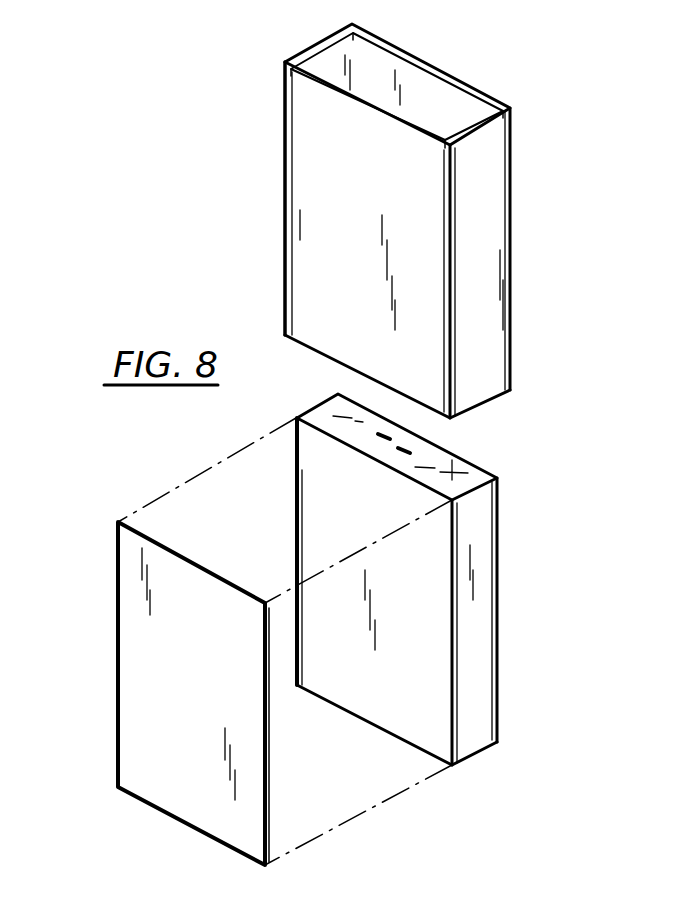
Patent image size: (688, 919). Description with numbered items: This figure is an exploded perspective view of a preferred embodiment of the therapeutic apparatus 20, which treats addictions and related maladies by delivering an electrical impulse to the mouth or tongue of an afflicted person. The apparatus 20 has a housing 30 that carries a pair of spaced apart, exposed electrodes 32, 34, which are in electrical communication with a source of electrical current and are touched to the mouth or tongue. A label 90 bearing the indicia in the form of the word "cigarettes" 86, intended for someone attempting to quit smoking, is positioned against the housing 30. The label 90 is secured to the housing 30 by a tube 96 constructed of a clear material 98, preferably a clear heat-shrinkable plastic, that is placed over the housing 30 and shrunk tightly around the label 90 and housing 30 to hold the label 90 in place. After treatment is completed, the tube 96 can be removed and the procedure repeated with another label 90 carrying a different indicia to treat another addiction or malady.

The tube 96 is at (450, 221).
The clear material 98 is at (532, 130).
The therapeutic apparatus 20 is at (463, 579).
The housing 30 is at (490, 678).
The electrode 32 is at (390, 438).
The electrode 34 is at (408, 451).
The word "cigarettes" 86 is at (137, 648).
The label 90 is at (153, 693).